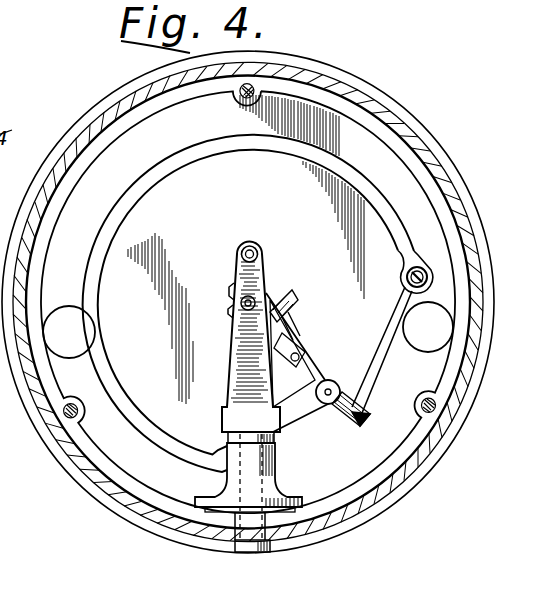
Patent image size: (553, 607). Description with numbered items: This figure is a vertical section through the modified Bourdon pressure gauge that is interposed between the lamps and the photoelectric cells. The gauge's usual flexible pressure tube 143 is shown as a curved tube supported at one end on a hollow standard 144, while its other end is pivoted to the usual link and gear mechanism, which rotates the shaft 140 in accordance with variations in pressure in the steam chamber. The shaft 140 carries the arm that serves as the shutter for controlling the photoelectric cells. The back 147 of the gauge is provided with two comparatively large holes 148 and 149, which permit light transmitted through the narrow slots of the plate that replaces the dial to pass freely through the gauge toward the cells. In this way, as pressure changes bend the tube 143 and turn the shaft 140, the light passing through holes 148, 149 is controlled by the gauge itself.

The shaft 140 is at (268, 289).
The flexible pressure tube 143 is at (137, 213).
The hollow standard 144 is at (280, 452).
The back 147 is at (395, 165).
The hole 148 is at (70, 320).
The hole 149 is at (410, 343).